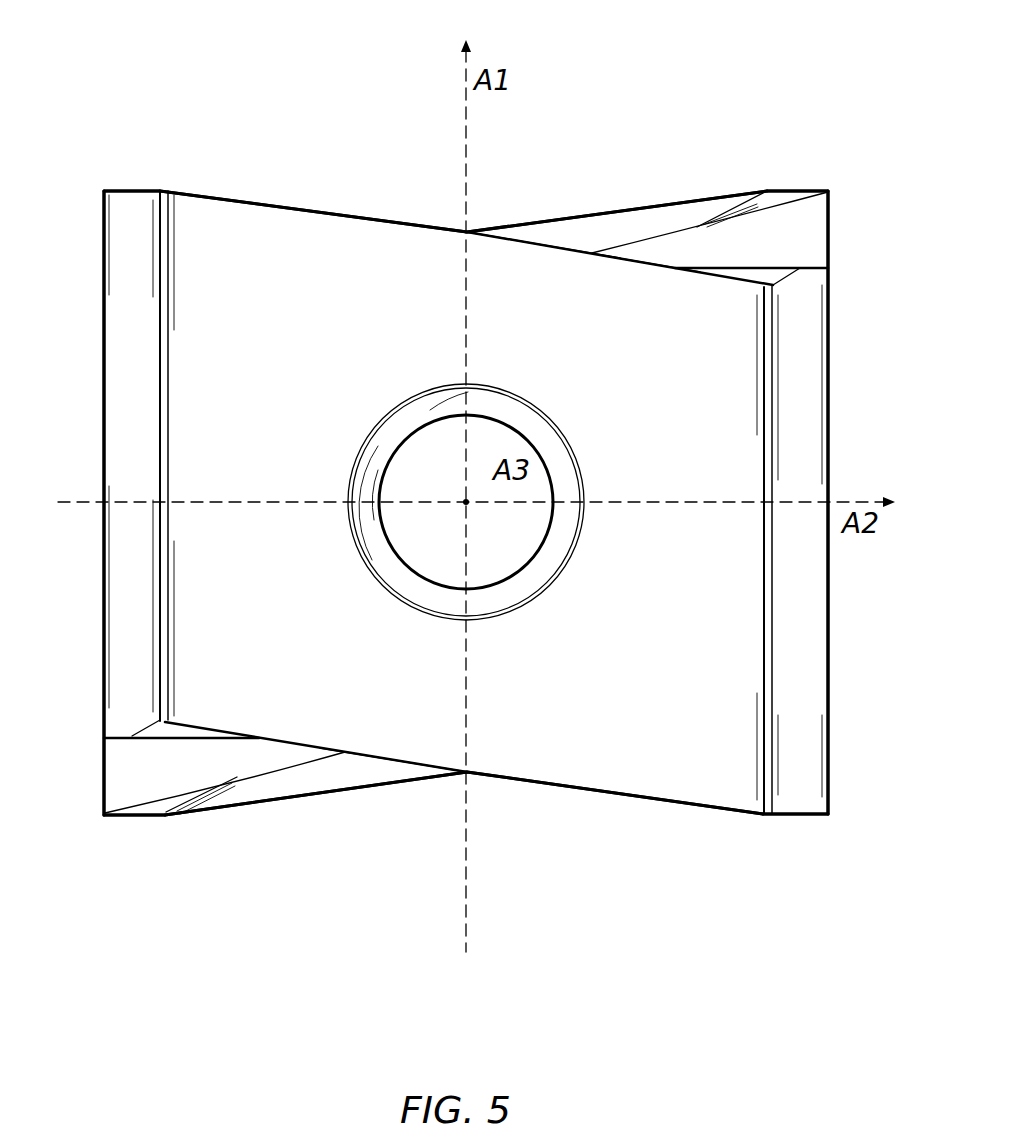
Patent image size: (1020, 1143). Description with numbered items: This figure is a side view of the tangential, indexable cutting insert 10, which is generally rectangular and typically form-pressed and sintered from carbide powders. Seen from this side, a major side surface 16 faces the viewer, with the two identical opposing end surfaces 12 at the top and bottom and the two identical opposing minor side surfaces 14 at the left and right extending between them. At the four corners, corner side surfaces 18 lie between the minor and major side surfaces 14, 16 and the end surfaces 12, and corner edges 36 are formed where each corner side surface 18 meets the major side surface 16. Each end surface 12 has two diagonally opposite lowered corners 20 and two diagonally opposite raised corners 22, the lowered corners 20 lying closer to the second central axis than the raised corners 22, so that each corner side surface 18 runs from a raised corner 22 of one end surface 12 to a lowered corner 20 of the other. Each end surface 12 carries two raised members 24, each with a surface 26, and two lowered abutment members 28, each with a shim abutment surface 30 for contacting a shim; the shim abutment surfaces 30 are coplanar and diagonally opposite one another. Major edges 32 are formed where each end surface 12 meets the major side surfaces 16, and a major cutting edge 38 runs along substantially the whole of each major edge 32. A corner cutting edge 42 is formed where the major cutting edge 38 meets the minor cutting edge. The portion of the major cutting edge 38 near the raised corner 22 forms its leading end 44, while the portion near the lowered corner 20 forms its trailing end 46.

The cutting insert 10 is at (196, 60).
The end surface 12 is at (521, 185).
The minor side surface 14 is at (95, 437).
The major side surface 16 is at (592, 764).
The corner side surface 18 is at (131, 645).
The lowered corner 20 is at (774, 294).
The raised corner 22 is at (162, 182).
The raised member 24 is at (705, 220).
The surface 26 is at (650, 238).
The lowered abutment member 28 is at (793, 261).
The shim abutment surface 30 is at (800, 203).
The major edge 32 is at (299, 204).
The corner edge 36 is at (168, 373).
The major cutting edge 38 is at (573, 250).
The corner cutting edge 42 is at (140, 190).
The leading end 44 is at (212, 192).
The trailing end 46 is at (672, 255).